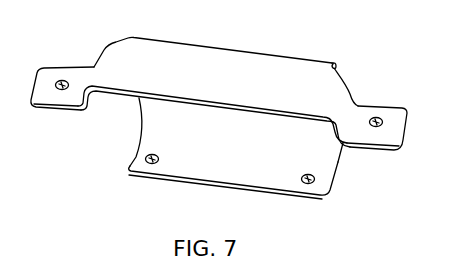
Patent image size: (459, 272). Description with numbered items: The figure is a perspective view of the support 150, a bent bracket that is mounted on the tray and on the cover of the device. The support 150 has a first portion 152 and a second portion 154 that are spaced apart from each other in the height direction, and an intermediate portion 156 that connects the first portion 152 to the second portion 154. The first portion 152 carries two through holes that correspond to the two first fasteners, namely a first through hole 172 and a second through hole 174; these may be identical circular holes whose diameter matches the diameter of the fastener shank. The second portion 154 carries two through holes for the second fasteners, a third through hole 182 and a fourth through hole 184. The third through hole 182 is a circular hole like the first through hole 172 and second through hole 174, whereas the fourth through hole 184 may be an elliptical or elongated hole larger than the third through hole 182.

The support 150 is at (341, 33).
The first portion 152 is at (197, 170).
The second portion 154 is at (263, 72).
The intermediate portion 156 is at (140, 99).
The first through hole 172 is at (145, 158).
The second through hole 174 is at (316, 175).
The third through hole 182 is at (63, 80).
The fourth through hole 184 is at (378, 117).